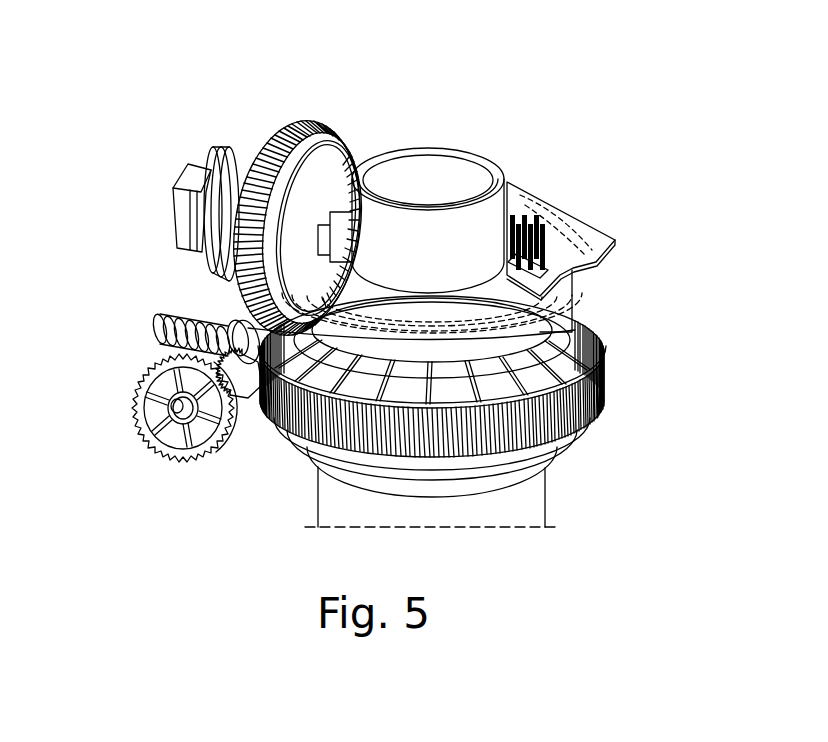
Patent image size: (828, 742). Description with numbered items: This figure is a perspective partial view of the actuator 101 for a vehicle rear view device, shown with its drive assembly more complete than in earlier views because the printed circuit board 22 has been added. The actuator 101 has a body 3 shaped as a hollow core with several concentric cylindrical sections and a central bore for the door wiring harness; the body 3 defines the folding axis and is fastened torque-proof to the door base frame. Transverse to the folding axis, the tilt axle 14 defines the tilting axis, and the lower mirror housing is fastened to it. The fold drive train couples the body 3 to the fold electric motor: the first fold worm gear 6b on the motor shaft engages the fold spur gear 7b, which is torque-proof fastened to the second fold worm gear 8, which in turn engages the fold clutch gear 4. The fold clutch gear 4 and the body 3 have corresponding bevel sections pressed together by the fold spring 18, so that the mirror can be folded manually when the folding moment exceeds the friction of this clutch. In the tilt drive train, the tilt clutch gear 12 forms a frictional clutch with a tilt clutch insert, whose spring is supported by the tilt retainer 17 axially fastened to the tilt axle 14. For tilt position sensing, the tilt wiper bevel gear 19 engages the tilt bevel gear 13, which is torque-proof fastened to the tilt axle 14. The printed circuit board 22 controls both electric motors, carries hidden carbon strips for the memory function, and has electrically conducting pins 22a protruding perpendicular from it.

The body 3 is at (445, 183).
The fold clutch gear 4 is at (595, 413).
The first fold worm gear 6b is at (150, 323).
The fold spur gear 7b is at (135, 413).
The second fold worm gear 8 is at (233, 332).
The tilt clutch gear 12 is at (300, 120).
The tilt bevel gear 13 is at (355, 133).
The tilt axle 14 is at (172, 210).
The tilt retainer 17 is at (240, 140).
The fold spring 18 is at (597, 358).
The tilt wiper bevel gear 19 is at (598, 377).
The printed circuit board 22 is at (527, 190).
The electrically conducting pins 22a is at (546, 234).
The actuator 101 is at (560, 86).